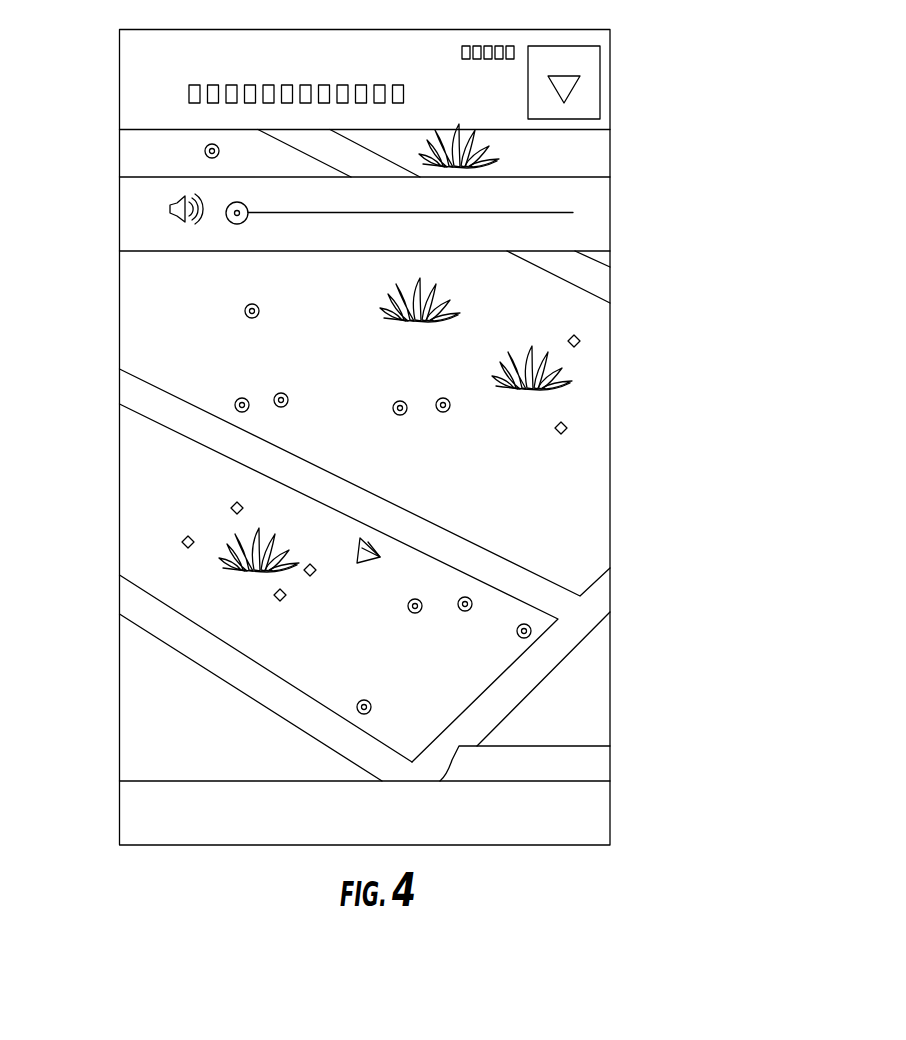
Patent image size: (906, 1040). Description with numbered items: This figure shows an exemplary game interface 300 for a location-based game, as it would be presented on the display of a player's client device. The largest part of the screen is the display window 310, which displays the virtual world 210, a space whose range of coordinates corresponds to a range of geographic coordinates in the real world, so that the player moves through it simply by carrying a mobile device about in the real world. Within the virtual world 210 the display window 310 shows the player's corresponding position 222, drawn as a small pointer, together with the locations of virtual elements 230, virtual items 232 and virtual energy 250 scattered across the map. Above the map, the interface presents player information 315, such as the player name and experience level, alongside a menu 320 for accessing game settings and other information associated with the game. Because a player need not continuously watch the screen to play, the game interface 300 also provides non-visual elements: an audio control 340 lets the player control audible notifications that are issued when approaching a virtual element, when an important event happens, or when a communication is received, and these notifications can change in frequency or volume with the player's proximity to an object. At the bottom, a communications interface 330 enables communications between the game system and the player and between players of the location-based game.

The game interface 300 is at (705, 113).
The display window 310 is at (603, 157).
The player information 315 is at (130, 50).
The menu 320 is at (592, 82).
The audio control 340 is at (130, 196).
The virtual world 210 is at (603, 488).
The virtual elements 230 is at (386, 292).
The virtual energy 250 is at (259, 316).
The virtual items 232 is at (232, 508).
The player position in the virtual world 222 is at (358, 560).
The communications interface 330 is at (603, 760).